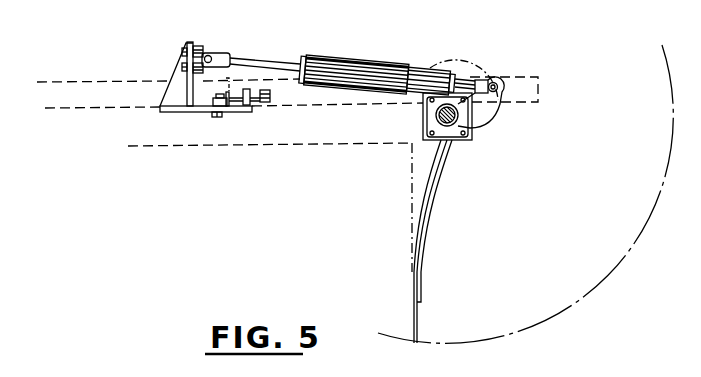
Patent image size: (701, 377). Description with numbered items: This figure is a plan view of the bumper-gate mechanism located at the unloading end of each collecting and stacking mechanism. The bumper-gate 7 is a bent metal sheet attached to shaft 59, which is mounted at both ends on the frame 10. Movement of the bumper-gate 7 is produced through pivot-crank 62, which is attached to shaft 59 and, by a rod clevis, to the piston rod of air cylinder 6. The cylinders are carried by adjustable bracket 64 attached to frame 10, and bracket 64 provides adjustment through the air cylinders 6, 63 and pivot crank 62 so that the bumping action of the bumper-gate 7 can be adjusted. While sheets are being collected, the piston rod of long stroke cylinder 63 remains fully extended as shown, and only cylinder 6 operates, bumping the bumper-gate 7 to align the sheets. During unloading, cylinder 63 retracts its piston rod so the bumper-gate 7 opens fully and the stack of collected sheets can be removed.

The frame 10 is at (80, 83).
The adjustable bracket 64 is at (187, 39).
The long stroke cylinder 63 is at (320, 56).
The air cylinder 6 is at (423, 66).
The shaft 59 is at (436, 116).
The pivot-crank 62 is at (477, 109).
The bumper-gate 7 is at (413, 274).